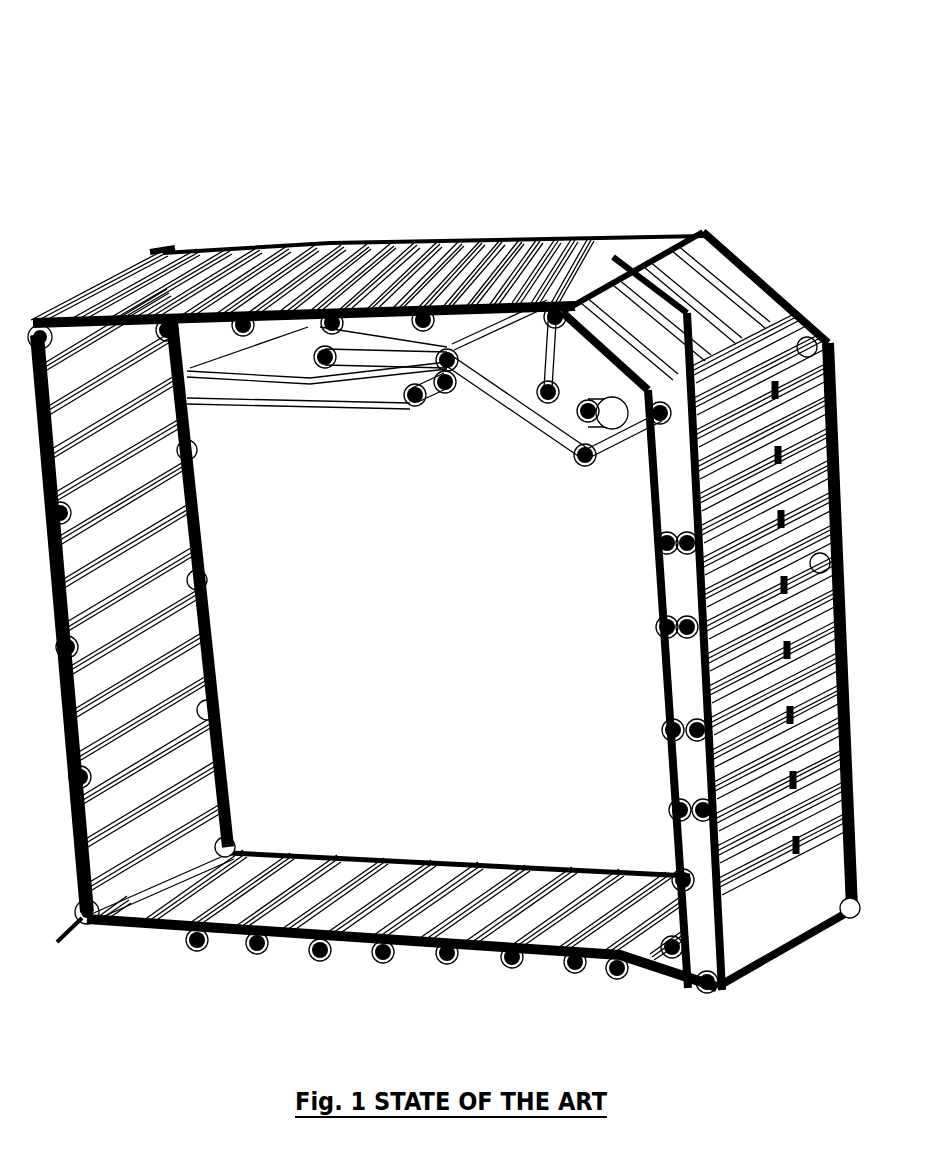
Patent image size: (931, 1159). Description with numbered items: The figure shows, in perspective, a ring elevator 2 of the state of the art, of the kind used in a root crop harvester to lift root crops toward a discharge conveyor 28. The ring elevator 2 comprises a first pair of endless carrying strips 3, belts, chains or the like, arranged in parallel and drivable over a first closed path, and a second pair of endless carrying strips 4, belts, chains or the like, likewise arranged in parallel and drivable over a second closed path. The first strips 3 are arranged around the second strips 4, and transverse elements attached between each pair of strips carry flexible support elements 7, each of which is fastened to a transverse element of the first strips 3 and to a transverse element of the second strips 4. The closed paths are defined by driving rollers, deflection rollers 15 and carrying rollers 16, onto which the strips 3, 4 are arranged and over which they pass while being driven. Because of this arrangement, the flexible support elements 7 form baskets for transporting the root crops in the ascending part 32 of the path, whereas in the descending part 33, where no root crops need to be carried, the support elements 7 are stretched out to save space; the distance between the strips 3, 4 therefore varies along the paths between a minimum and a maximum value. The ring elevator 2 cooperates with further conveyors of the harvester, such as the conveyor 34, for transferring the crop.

The ring elevator 2 is at (162, 183).
The first pair of endless carrying strips 3 is at (752, 297).
The second pair of endless carrying strips 4 is at (790, 648).
The flexible support elements 7 is at (670, 663).
The deflection rollers 15 is at (707, 982).
The carrying rollers 16 is at (247, 947).
The discharge conveyor 28 is at (293, 393).
The ascending part 32 is at (628, 561).
The descending part 33 is at (222, 625).
The conveyor 34 is at (510, 417).